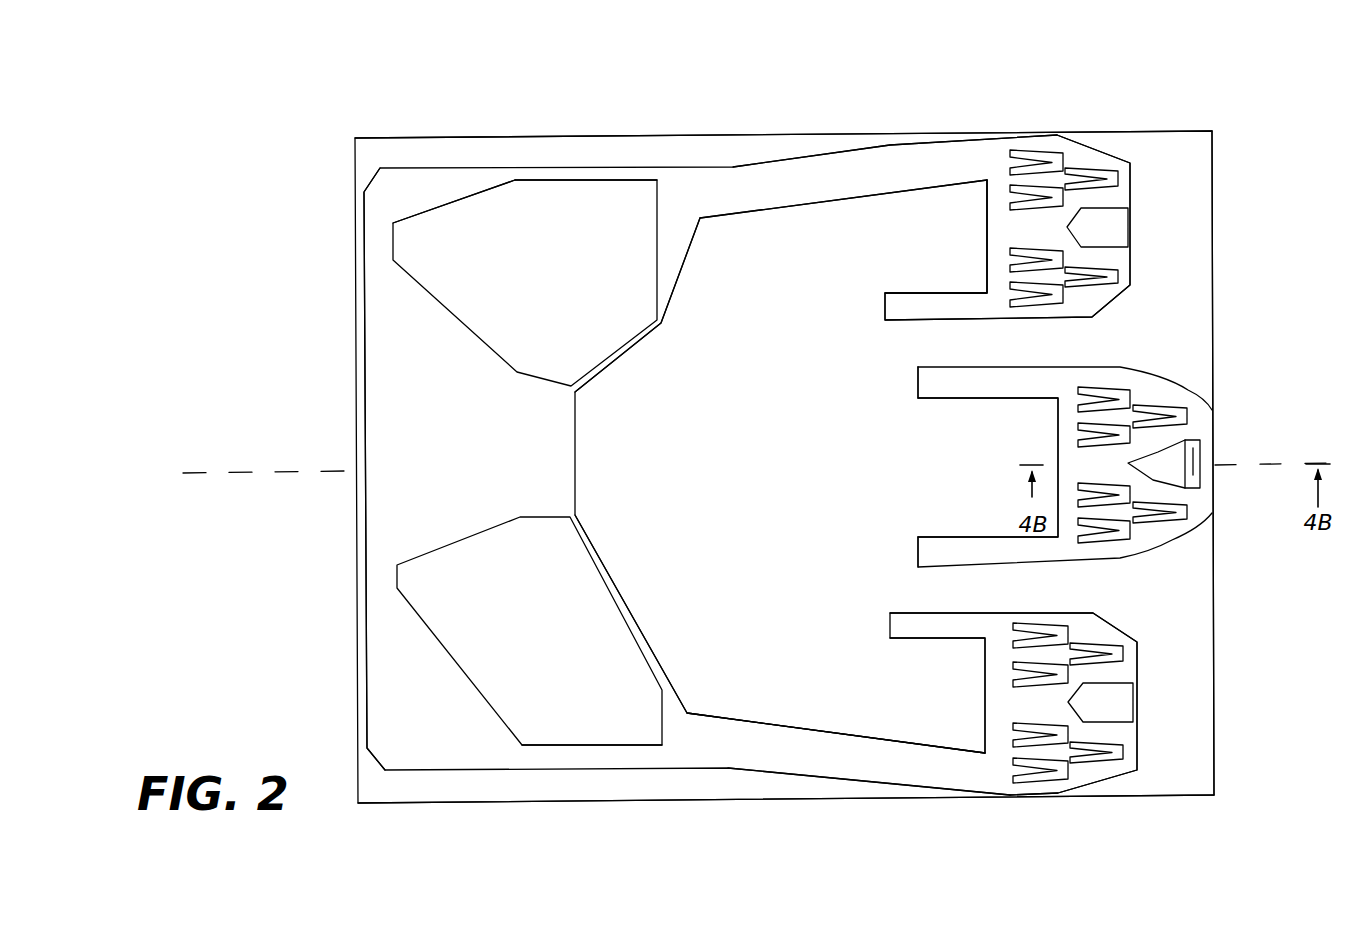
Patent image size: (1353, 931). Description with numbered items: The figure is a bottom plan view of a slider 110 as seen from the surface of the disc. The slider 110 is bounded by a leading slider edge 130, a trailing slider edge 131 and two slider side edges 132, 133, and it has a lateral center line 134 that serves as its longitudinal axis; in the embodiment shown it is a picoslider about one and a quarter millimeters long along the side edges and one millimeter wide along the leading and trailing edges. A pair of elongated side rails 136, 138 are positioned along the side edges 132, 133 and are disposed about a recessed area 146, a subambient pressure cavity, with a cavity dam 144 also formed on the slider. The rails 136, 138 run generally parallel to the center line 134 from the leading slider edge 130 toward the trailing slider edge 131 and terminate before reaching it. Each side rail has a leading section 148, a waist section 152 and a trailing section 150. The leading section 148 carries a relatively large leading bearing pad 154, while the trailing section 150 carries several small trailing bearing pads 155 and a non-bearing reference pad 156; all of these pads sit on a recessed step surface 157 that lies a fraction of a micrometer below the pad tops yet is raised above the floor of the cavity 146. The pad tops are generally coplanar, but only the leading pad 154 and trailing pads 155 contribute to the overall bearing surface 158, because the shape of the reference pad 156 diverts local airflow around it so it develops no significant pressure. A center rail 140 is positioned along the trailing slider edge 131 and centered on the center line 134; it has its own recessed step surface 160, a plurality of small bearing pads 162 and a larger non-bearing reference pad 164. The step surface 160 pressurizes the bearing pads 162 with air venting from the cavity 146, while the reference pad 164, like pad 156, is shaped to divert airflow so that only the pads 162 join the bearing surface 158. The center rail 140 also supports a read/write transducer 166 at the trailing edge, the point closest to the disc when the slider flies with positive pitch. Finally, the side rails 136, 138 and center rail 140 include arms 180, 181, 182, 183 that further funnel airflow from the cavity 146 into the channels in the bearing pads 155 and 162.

The slider 110 is at (262, 140).
The leading slider edge 130 is at (358, 682).
The trailing slider edge 131 is at (1215, 686).
The slider side edge 132 is at (423, 135).
The slider side edge 133 is at (437, 805).
The lateral center line 134 is at (242, 472).
The side rail 136 is at (708, 165).
The side rail 138 is at (728, 768).
The center rail 140 is at (1190, 387).
The cavity dam 144 is at (405, 363).
The recessed area 146 is at (770, 457).
The leading section 148 is at (598, 178).
The trailing section 150 is at (1012, 152).
The waist section 152 is at (812, 157).
The leading bearing pad 154 is at (540, 198).
The trailing bearing pads 155 is at (1043, 153).
The non-bearing reference pad 156 is at (1100, 228).
The recessed step surface 157 is at (877, 181).
The bearing surface 158 is at (483, 237).
The recessed step surface 160 is at (1023, 387).
The bearing pads 162 is at (1117, 543).
The non-bearing reference pad 164 is at (1182, 458).
The read/write transducer 166 is at (1193, 457).
The arm 180 is at (885, 302).
The arm 181 is at (918, 380).
The arm 182 is at (918, 548).
The arm 183 is at (890, 620).